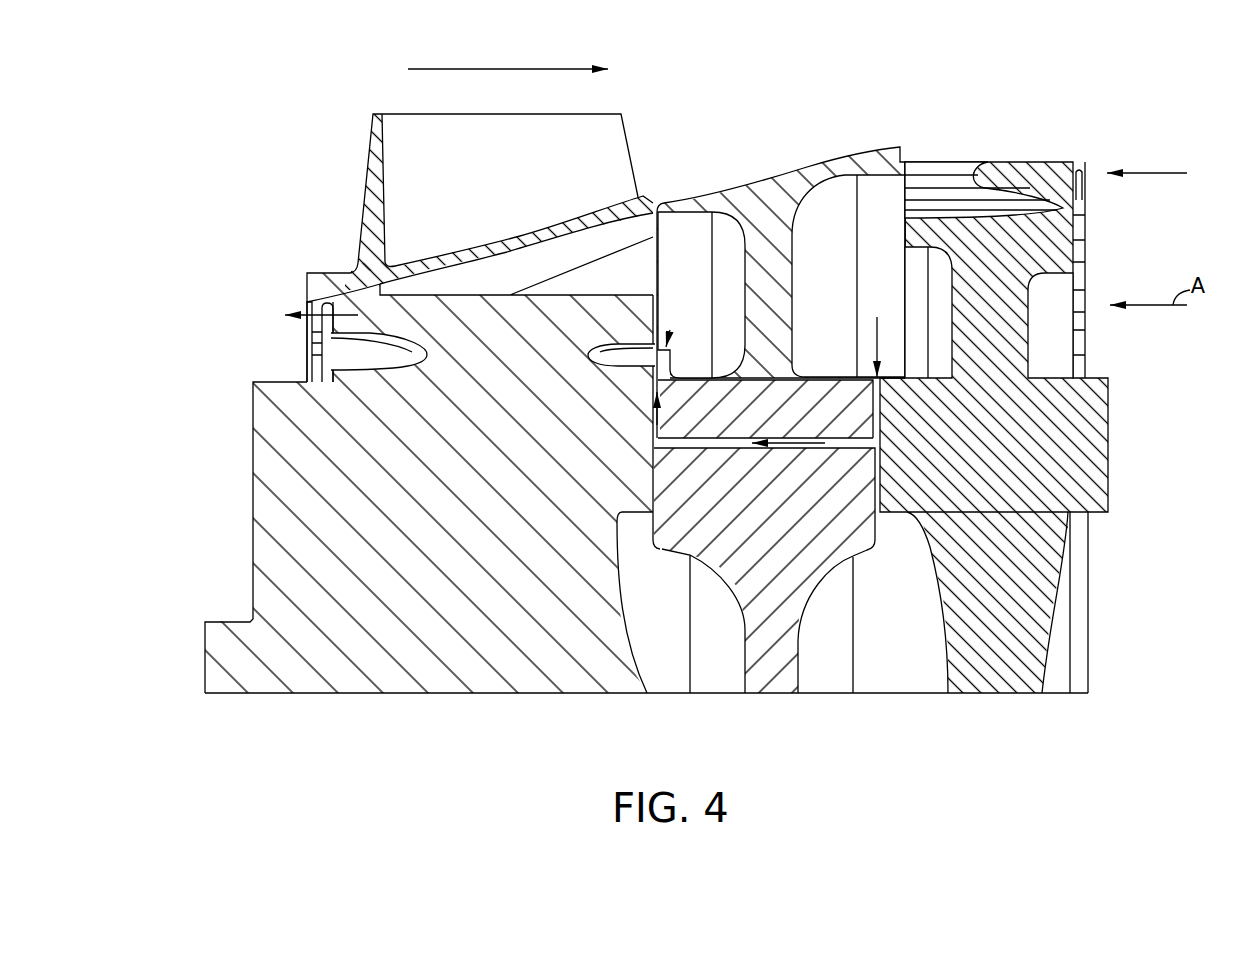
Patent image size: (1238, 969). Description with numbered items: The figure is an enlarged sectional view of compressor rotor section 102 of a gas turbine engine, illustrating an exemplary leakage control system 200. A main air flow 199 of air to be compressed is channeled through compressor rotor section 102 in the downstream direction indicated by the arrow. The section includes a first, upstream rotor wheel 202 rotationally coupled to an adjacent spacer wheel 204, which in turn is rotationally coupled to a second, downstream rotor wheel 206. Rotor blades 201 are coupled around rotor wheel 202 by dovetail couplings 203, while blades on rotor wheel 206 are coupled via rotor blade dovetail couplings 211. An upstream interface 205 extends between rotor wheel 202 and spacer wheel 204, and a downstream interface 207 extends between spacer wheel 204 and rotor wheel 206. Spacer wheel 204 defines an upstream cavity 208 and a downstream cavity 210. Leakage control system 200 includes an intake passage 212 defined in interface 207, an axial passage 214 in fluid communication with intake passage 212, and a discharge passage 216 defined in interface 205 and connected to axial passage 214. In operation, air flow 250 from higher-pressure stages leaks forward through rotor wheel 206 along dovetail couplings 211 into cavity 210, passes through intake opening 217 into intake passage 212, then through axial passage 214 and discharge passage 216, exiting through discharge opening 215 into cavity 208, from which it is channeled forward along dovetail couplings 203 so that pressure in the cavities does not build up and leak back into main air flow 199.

The compressor rotor section 102 is at (267, 97).
The main air flow 199 is at (472, 68).
The leakage control system 200 is at (280, 245).
The rotor blades 201 is at (481, 172).
The first rotor wheel 202 is at (275, 428).
The dovetail couplings 203 is at (483, 329).
The spacer wheel 204 is at (770, 643).
The upstream interface 205 is at (360, 330).
The second rotor wheel 206 is at (1083, 451).
The downstream interface 207 is at (880, 410).
The upstream cavity 208 is at (664, 274).
The downstream cavity 210 is at (806, 264).
The rotor blade dovetail couplings 211 is at (980, 203).
The intake passage 212 is at (866, 400).
The axial passage 214 is at (708, 450).
The discharge opening 215 is at (670, 330).
The discharge passage 216 is at (655, 425).
The intake opening 217 is at (898, 372).
The air flow 250 is at (307, 302).